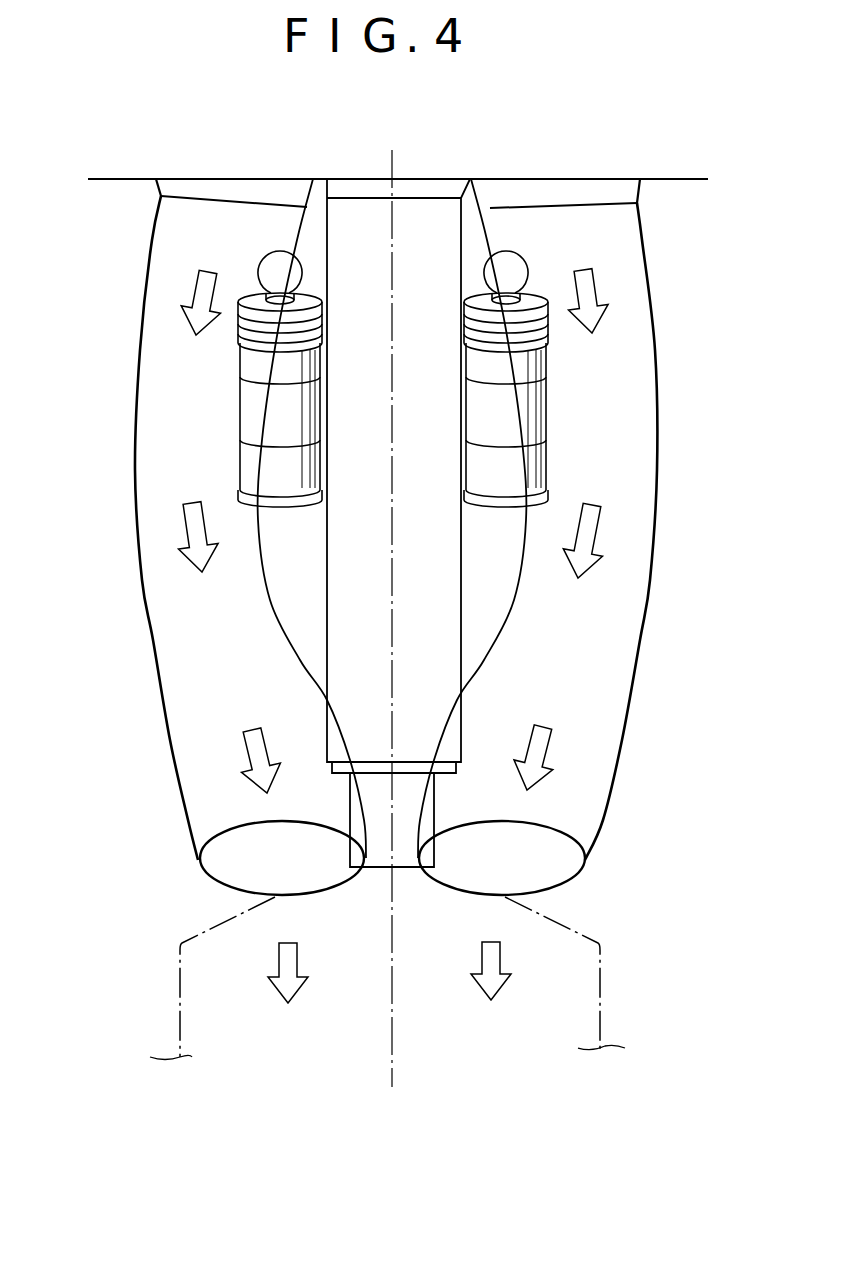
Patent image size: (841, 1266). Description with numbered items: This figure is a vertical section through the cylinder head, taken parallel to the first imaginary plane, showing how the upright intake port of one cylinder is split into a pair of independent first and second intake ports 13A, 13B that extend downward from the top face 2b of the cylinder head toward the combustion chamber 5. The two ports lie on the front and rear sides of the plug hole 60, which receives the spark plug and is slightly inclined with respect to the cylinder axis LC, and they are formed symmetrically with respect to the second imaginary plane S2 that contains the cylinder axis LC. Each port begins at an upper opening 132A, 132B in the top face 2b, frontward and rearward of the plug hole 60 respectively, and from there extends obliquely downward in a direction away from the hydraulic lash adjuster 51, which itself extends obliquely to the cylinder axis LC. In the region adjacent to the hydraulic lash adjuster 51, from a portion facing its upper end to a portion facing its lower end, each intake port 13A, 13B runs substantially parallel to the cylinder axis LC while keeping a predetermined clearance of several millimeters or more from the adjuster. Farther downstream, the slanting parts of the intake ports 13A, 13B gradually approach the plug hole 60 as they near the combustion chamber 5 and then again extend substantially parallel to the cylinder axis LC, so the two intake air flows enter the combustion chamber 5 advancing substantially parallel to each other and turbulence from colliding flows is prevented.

The top face of the cylinder head 2b is at (590, 178).
The cylinder axis LC is at (392, 168).
The plug hole 60 is at (430, 232).
The first intake port 13A is at (183, 618).
The second intake port 13B is at (597, 630).
The upper opening of the first intake port 132A is at (235, 193).
The upper opening of the second intake port 132B is at (535, 192).
The hydraulic lash adjuster 51 is at (248, 382).
The combustion chamber 5 is at (368, 1010).
The second imaginary plane S2 is at (398, 1056).